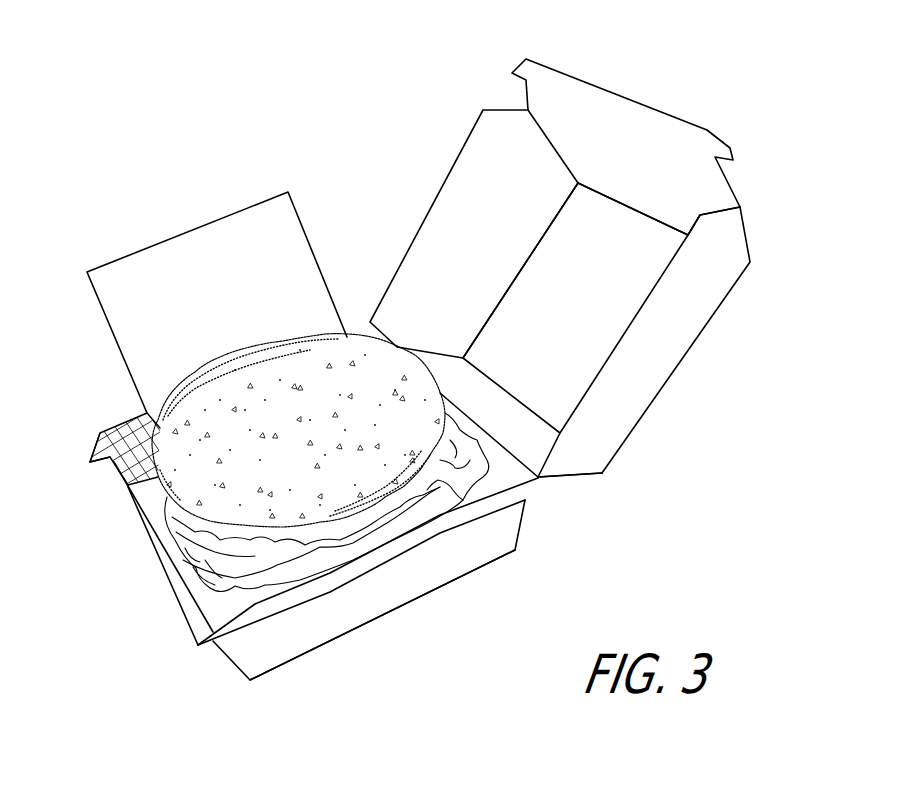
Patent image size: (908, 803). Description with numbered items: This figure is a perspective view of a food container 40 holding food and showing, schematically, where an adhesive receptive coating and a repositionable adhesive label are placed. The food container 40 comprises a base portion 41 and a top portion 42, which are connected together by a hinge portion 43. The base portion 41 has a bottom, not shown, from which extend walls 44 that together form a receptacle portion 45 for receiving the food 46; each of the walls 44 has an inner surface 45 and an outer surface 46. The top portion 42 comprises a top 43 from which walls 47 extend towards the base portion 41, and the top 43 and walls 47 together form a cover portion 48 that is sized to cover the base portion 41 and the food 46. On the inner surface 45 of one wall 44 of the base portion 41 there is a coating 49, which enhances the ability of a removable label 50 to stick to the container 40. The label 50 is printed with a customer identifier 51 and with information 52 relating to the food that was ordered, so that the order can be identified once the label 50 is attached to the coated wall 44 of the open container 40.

The food container 40 is at (366, 158).
The base portion 41 is at (126, 553).
The top portion 42 is at (796, 142).
The hinge portion 43 is at (640, 253).
The walls 44 is at (100, 433).
The receptacle portion 45 is at (128, 428).
The food 46 is at (307, 635).
The walls 47 is at (441, 183).
The cover portion 48 is at (578, 325).
The coating 49 is at (116, 464).
The removable label 50 is at (198, 283).
The customer identifier 51 is at (245, 260).
The information 52 is at (178, 343).